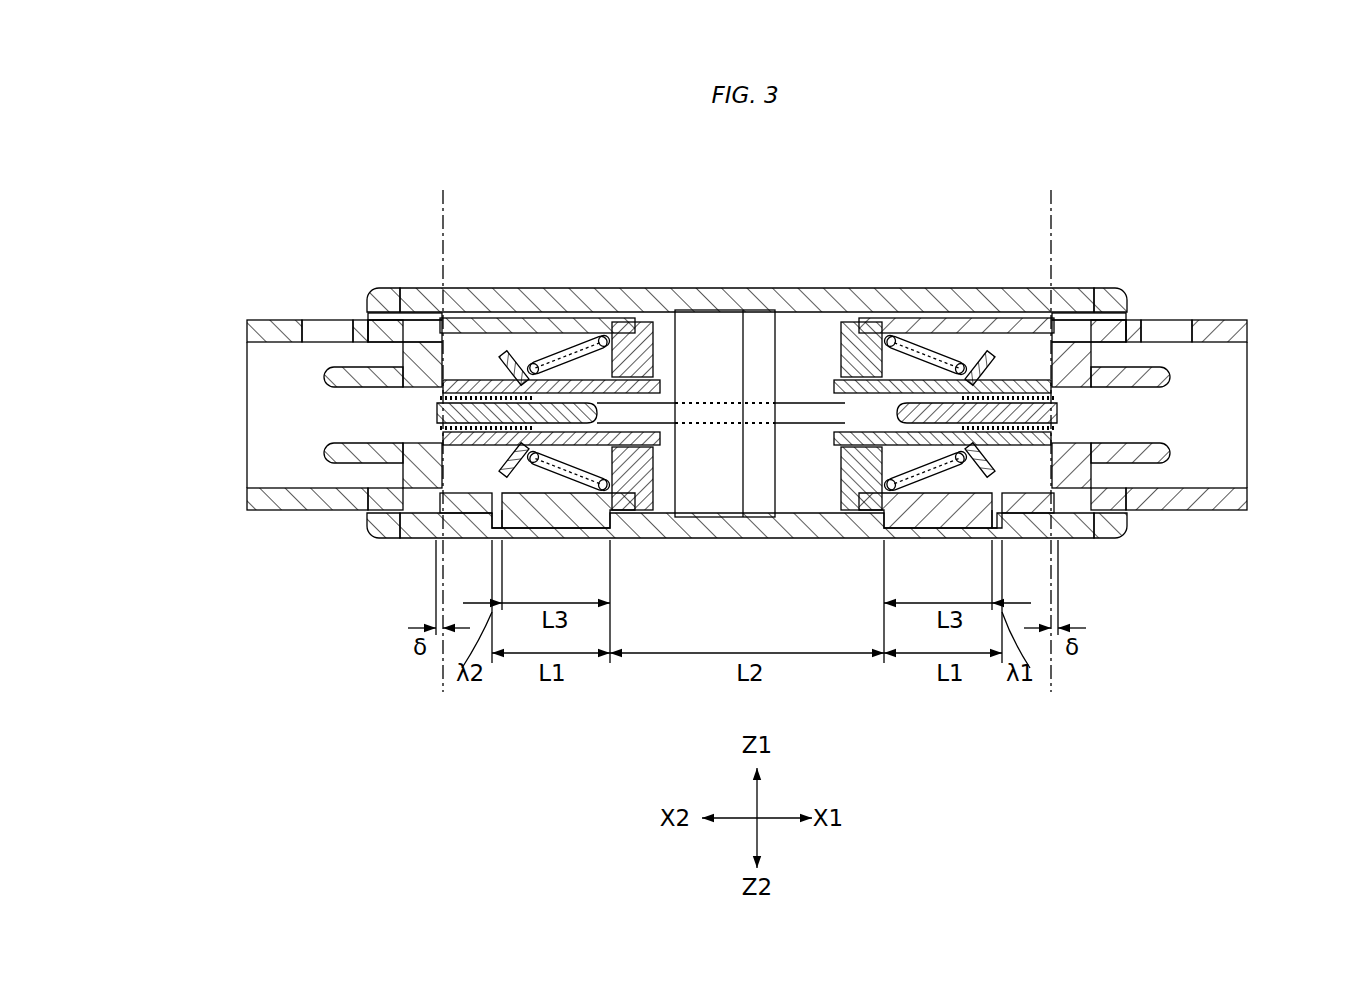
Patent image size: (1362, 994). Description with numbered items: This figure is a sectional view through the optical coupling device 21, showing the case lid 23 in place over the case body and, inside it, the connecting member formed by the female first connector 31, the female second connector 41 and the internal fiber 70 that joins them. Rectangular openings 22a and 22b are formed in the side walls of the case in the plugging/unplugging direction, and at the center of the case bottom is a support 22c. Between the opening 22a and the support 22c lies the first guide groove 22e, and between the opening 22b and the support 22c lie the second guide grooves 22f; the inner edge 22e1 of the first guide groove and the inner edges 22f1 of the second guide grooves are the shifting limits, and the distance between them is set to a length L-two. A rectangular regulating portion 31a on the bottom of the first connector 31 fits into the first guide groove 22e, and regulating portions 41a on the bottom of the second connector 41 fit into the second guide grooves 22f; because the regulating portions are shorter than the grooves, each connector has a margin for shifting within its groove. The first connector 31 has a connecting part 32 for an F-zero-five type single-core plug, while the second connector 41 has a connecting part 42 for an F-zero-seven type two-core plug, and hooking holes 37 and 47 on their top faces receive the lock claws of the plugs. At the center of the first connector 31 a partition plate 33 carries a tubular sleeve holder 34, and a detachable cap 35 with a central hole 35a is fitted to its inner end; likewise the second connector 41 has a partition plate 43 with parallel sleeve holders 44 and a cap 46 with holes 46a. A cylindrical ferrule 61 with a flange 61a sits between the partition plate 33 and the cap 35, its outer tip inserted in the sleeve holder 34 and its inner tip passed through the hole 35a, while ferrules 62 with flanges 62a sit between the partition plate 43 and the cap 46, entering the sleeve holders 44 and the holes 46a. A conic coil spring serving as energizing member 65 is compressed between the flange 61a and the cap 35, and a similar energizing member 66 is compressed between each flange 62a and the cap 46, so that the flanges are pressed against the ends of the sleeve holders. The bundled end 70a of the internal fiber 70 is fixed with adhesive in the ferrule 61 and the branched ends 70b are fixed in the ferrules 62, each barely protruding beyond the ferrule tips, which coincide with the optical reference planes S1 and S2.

The optical coupling device 21 is at (748, 290).
The opening 22a is at (1105, 320).
The opening 22b is at (345, 320).
The support 22c is at (705, 325).
The first guide groove 22e is at (1050, 540).
The inner edge of first guide groove 22e1 is at (878, 520).
The second guide groove 22f is at (440, 540).
The inner edge of second guide groove 22f1 is at (625, 522).
The case lid 23 is at (403, 293).
The first connector 31 is at (1258, 330).
The regulating portion 31a is at (935, 512).
The connecting part 32 is at (1225, 378).
The partition plate 33 is at (1085, 465).
The sleeve holder 34 is at (1150, 440).
The cap 35 is at (842, 490).
The hole 35a is at (840, 445).
The hooking hole 37 is at (1178, 330).
The second connector 41 is at (262, 518).
The regulating portion 41a is at (562, 512).
The connecting part 42 is at (278, 457).
The partition plate 43 is at (410, 352).
The sleeve holder 44 is at (335, 424).
The cap 46 is at (655, 470).
The hole 46a is at (652, 328).
The hooking hole 47 is at (317, 332).
The ferrule 61 is at (855, 378).
The flange 61a is at (980, 355).
The ferrule 62 is at (665, 438).
The flange 62a is at (513, 356).
The energizing member 65 is at (905, 345).
The energizing member 66 is at (567, 350).
The internal fiber 70 is at (800, 400).
The bundled end 70a is at (1060, 405).
The branched end 70b is at (456, 393).
The optical reference plane S1 is at (442, 443).
The optical reference plane S2 is at (1050, 444).